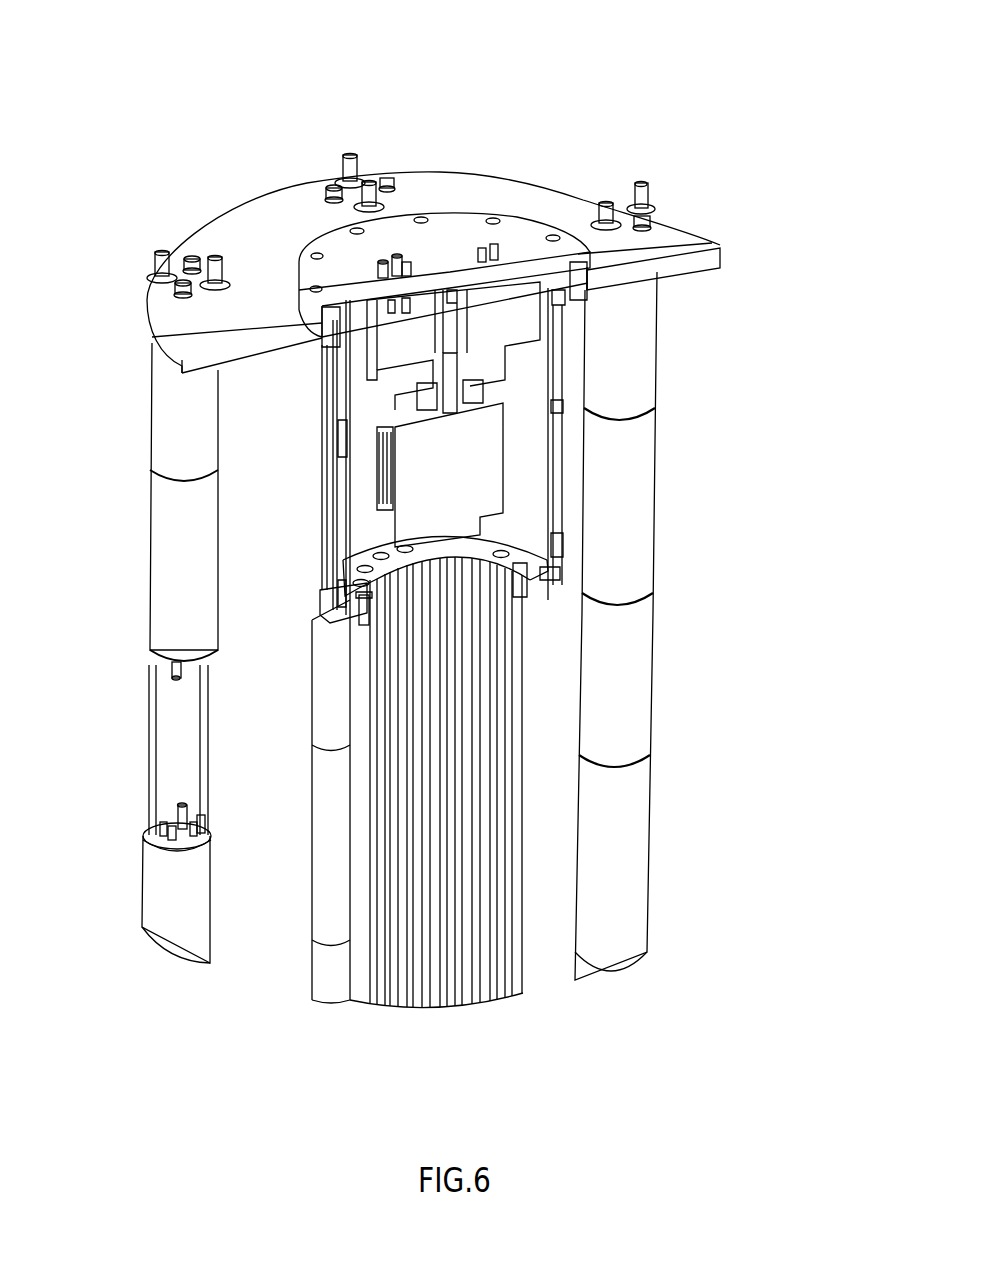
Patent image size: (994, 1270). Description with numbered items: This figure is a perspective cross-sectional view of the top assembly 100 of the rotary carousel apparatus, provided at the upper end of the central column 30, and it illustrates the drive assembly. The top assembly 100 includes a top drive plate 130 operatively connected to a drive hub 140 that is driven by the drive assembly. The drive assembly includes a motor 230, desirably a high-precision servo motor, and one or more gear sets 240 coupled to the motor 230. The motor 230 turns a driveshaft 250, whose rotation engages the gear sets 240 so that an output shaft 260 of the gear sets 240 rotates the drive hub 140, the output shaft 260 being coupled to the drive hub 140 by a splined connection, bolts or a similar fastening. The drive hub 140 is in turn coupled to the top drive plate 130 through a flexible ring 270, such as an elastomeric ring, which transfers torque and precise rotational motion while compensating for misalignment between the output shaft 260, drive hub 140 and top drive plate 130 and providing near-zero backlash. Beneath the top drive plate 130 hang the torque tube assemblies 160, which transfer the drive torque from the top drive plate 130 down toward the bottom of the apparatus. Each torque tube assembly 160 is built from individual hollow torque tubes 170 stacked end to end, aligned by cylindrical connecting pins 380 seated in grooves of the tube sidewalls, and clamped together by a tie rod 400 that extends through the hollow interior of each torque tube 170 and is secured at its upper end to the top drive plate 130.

The top assembly 100 is at (575, 74).
The top drive plate 130 is at (675, 232).
The flexible ring 270 is at (628, 263).
The drive hub 140 is at (465, 255).
The torque tube assembly 160 is at (618, 513).
The torque tube 170 is at (173, 598).
The tie rod 400 is at (155, 743).
The connecting pin 380 is at (177, 670).
The gear set 240 is at (395, 337).
The output shaft 260 is at (447, 345).
The motor driveshaft 250 is at (448, 402).
The motor 230 is at (432, 507).
The central column 30 is at (510, 977).